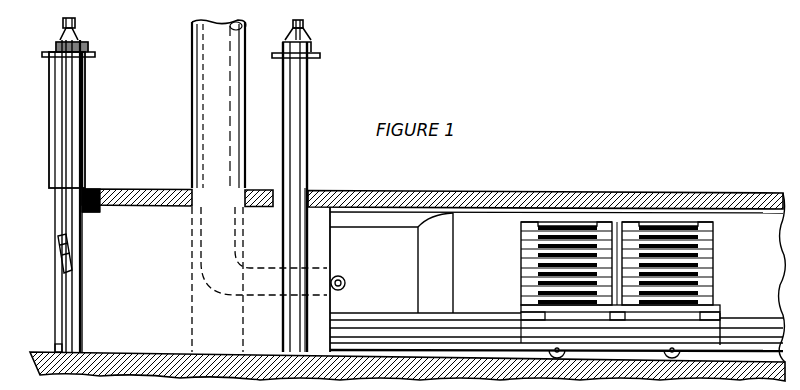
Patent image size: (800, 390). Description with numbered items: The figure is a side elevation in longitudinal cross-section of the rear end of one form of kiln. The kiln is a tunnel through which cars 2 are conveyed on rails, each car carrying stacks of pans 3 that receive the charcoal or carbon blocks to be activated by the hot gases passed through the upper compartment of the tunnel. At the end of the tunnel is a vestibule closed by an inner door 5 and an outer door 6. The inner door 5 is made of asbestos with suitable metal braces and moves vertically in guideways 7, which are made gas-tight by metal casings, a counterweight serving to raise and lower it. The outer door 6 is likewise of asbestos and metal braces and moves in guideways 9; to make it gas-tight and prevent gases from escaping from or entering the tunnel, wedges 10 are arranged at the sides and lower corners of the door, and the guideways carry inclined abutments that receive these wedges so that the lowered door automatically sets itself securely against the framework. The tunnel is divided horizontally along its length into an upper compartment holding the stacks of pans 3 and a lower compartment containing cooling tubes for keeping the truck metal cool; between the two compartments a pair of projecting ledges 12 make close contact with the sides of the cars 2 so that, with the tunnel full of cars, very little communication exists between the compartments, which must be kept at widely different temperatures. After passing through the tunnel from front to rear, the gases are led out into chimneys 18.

The car 2 is at (521, 292).
The stack of pans 3 is at (713, 290).
The inner door 5 is at (300, 252).
The outer door 6 is at (62, 300).
The guideway 7 is at (303, 333).
The guideway 9 is at (98, 160).
The wedge 10 is at (62, 256).
The projecting ledge 12 is at (758, 318).
The chimney 18 is at (192, 162).